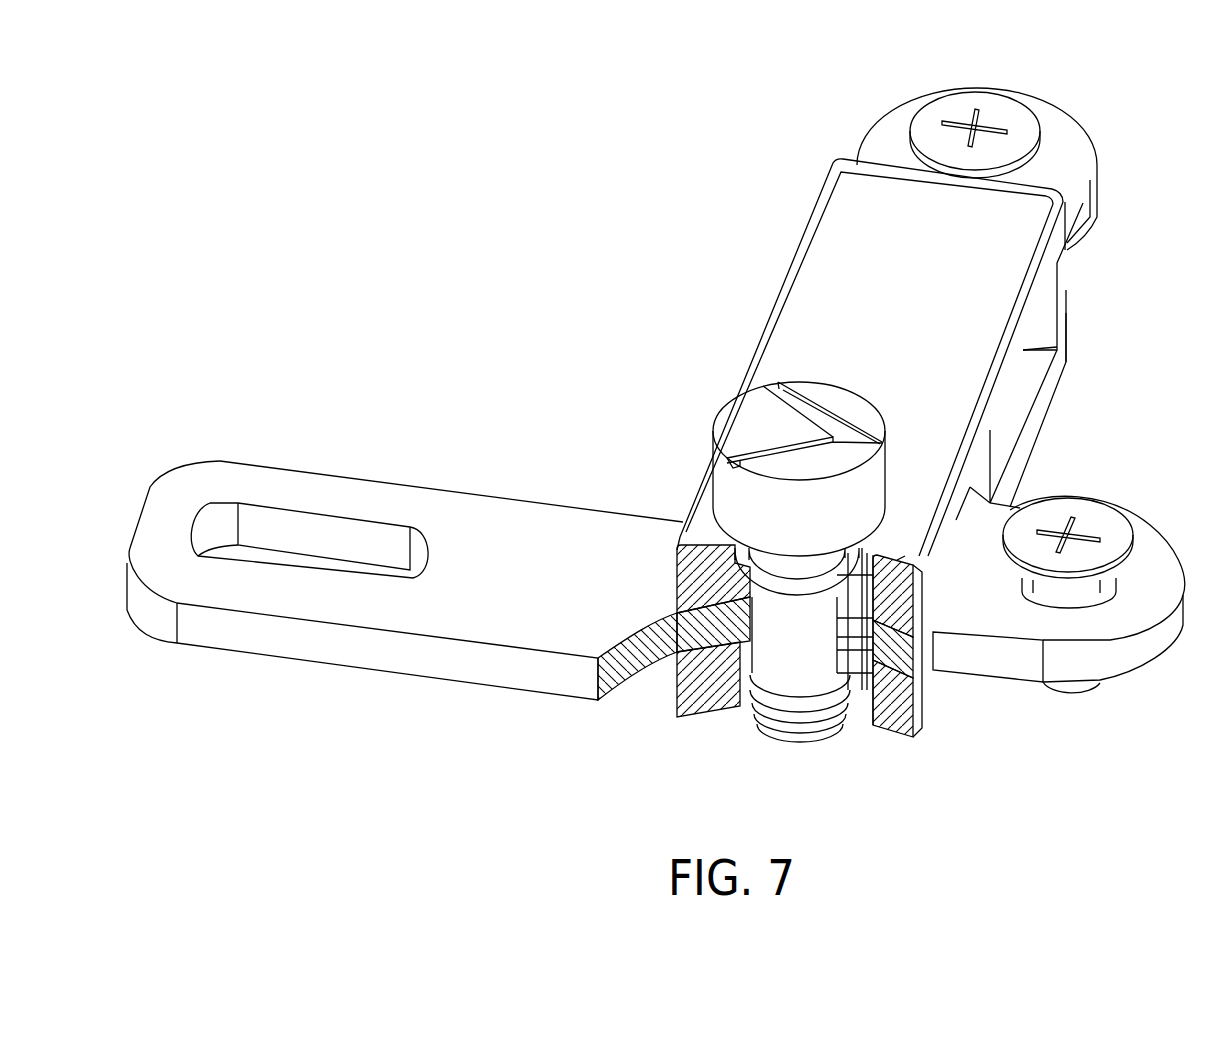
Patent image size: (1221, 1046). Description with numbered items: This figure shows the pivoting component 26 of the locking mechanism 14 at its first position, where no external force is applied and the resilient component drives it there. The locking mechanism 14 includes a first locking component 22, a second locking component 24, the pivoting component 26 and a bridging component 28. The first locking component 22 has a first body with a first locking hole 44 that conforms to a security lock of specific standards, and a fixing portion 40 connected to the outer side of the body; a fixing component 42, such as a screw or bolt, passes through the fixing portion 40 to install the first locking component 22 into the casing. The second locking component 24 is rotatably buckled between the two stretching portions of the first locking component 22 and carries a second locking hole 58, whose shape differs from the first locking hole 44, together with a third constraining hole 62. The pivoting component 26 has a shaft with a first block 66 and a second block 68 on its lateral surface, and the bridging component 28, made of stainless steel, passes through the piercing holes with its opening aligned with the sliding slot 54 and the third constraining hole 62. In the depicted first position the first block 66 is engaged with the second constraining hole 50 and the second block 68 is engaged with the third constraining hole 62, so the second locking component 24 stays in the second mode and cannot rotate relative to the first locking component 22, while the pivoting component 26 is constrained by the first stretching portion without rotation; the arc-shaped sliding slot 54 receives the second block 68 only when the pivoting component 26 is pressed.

The locking mechanism 14 is at (511, 183).
The first locking component 22 is at (802, 262).
The second locking component 24 is at (520, 527).
The pivoting component 26 is at (727, 415).
The bridging component 28 is at (705, 700).
The fixing portion 40 is at (1068, 165).
The fixing component 42 is at (1015, 113).
The first locking hole 44 is at (1043, 332).
The second constraining hole 50 is at (873, 583).
The sliding slot 54 is at (873, 682).
The second locking hole 58 is at (315, 537).
The third constraining hole 62 is at (873, 628).
The first block 66 is at (897, 560).
The second block 68 is at (867, 678).